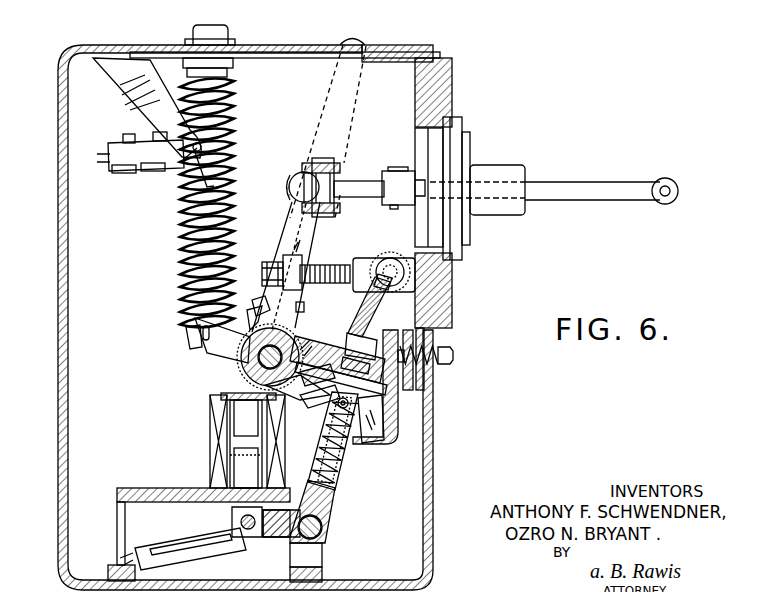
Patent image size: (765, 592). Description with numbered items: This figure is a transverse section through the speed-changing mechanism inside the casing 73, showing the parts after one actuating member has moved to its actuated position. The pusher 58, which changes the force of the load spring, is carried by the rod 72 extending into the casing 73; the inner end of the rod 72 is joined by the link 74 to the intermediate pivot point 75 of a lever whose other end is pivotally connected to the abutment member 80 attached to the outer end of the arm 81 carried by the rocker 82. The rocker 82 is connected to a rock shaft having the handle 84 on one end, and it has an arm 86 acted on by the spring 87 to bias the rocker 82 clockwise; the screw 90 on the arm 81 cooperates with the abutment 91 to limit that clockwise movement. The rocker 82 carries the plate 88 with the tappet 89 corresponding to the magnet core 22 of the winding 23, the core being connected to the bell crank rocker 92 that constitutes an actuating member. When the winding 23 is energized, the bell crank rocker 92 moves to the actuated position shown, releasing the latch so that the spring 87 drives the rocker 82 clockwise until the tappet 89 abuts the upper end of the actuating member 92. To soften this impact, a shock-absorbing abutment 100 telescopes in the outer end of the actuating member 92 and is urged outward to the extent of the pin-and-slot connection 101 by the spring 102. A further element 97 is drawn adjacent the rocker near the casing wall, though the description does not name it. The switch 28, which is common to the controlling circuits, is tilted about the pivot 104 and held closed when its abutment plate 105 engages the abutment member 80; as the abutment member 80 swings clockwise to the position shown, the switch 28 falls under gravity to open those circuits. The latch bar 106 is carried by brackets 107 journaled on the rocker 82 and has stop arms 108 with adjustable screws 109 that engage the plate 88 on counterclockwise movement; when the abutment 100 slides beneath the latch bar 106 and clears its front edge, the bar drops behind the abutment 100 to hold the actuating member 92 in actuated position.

The casing 73 is at (58, 128).
The switch 28 is at (143, 150).
The pivot 104 is at (186, 162).
The abutment plate 105 is at (215, 183).
The spring 87 is at (182, 235).
The handle 84 is at (330, 84).
The intermediate pivot point 75 is at (325, 160).
The abutment member 80 is at (298, 188).
The link 74 is at (355, 185).
The rod 72 is at (580, 185).
The pusher 58 is at (678, 182).
The arm 81 is at (298, 224).
The stop arms 108 is at (257, 305).
The screw 90 is at (333, 263).
The abutment 91 is at (365, 260).
The rocker 82 is at (255, 365).
The arm 86 is at (188, 340).
The brackets 107 is at (252, 326).
The adjustable screws 109 is at (304, 310).
The plate 88 is at (318, 300).
The tappet 89 is at (368, 305).
The spring bolt 97 is at (430, 371).
The shock-absorbing abutment 100 is at (355, 410).
The pin-and-slot connection 101 is at (338, 404).
The latch bar 106 is at (320, 378).
The spring 102 is at (336, 468).
The bell crank rocker 92 is at (330, 498).
The winding 23 is at (227, 440).
The magnet core 22 is at (240, 464).